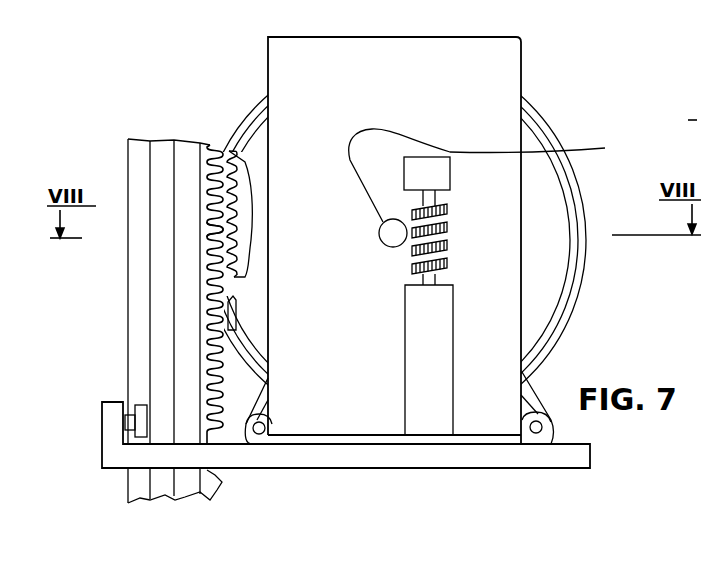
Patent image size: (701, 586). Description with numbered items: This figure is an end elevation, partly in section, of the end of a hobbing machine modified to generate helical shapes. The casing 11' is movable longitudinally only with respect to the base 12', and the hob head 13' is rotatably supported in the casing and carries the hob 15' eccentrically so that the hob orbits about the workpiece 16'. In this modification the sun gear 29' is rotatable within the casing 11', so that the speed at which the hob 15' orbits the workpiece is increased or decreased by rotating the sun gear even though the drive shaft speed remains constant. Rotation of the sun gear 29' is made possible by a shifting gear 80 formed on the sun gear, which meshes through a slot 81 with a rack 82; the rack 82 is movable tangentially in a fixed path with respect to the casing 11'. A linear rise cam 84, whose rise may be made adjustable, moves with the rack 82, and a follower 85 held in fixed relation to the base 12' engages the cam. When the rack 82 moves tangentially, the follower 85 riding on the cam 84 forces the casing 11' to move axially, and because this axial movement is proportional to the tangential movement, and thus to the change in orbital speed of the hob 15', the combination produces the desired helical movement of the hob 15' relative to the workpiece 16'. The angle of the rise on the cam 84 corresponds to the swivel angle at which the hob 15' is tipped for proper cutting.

The casing 11' is at (425, 231).
The base 12' is at (329, 435).
The hob head 13' is at (408, 240).
The hob 15' is at (525, 296).
The workpiece 16' is at (492, 188).
The sun gear 29' is at (163, 235).
The shifting gear 80 is at (213, 263).
The slot 81 is at (224, 147).
The rack 82 is at (210, 146).
The linear rise cam 84 is at (154, 321).
The follower 85 is at (140, 407).